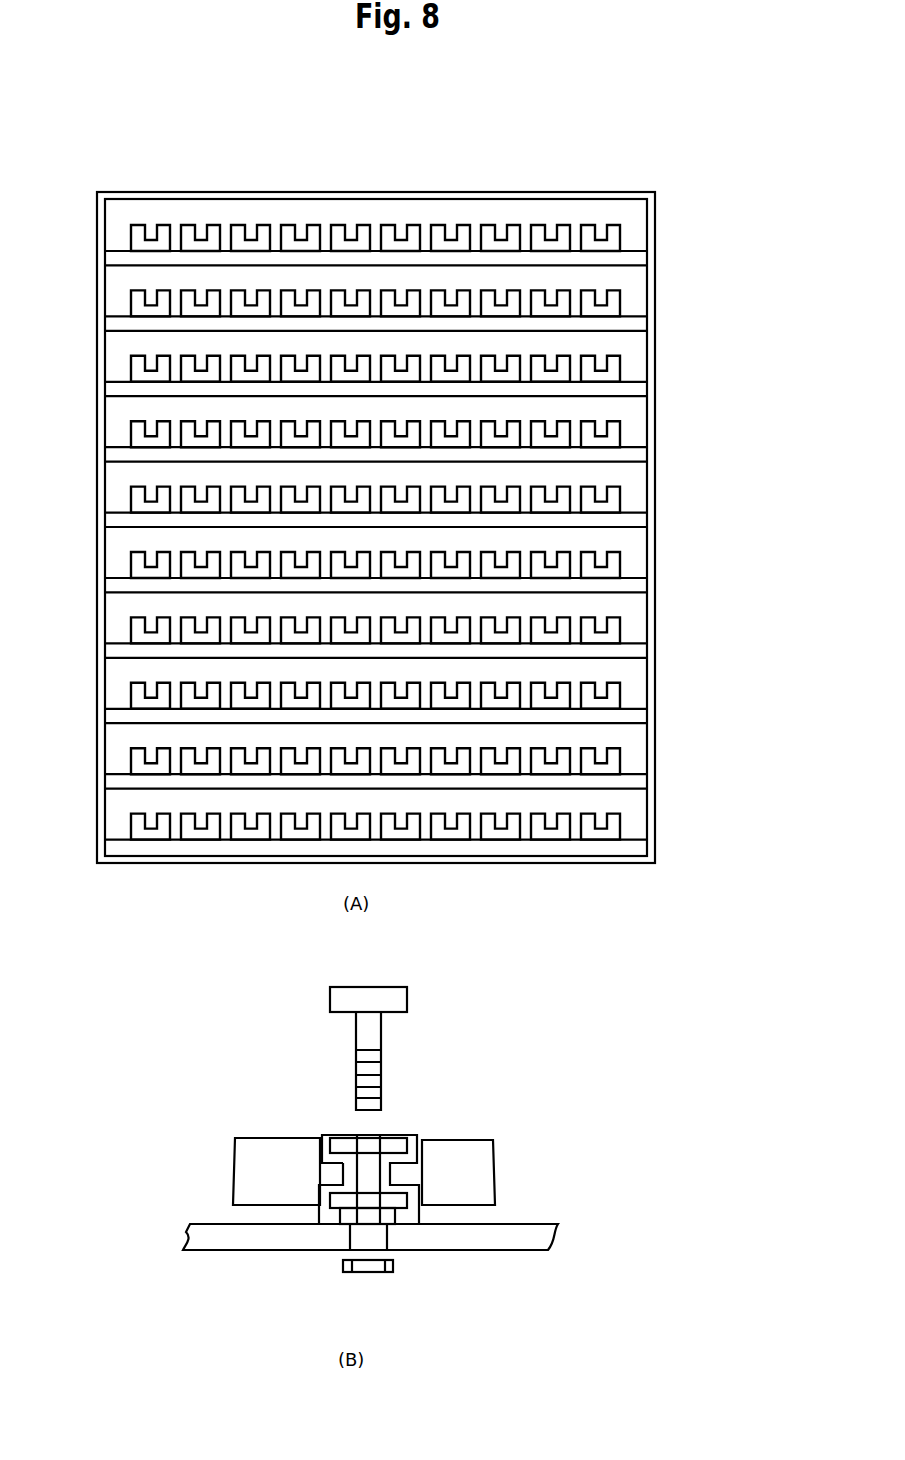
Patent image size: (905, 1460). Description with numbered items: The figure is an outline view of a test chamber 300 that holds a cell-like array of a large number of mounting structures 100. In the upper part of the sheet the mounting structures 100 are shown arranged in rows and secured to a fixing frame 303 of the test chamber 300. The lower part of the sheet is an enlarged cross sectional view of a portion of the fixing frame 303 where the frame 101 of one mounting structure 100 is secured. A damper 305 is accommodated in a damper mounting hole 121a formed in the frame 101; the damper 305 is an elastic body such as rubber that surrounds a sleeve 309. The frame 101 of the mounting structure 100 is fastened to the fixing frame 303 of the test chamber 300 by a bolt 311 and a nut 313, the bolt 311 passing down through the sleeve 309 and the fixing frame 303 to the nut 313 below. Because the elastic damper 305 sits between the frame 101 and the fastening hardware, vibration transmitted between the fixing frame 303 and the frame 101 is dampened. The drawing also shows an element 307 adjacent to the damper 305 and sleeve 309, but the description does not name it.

The mounting structure 100 is at (164, 207).
The test chamber 300 is at (493, 178).
The fixing frame 303 is at (633, 262).
The damper 305 is at (412, 1080).
The pressing plate 307 is at (412, 1137).
The sleeve 309 is at (355, 1140).
The bolt 311 is at (407, 1000).
The nut 313 is at (395, 1266).
The damper mounting hole 121a is at (317, 1108).
The frame 101 is at (483, 1140).